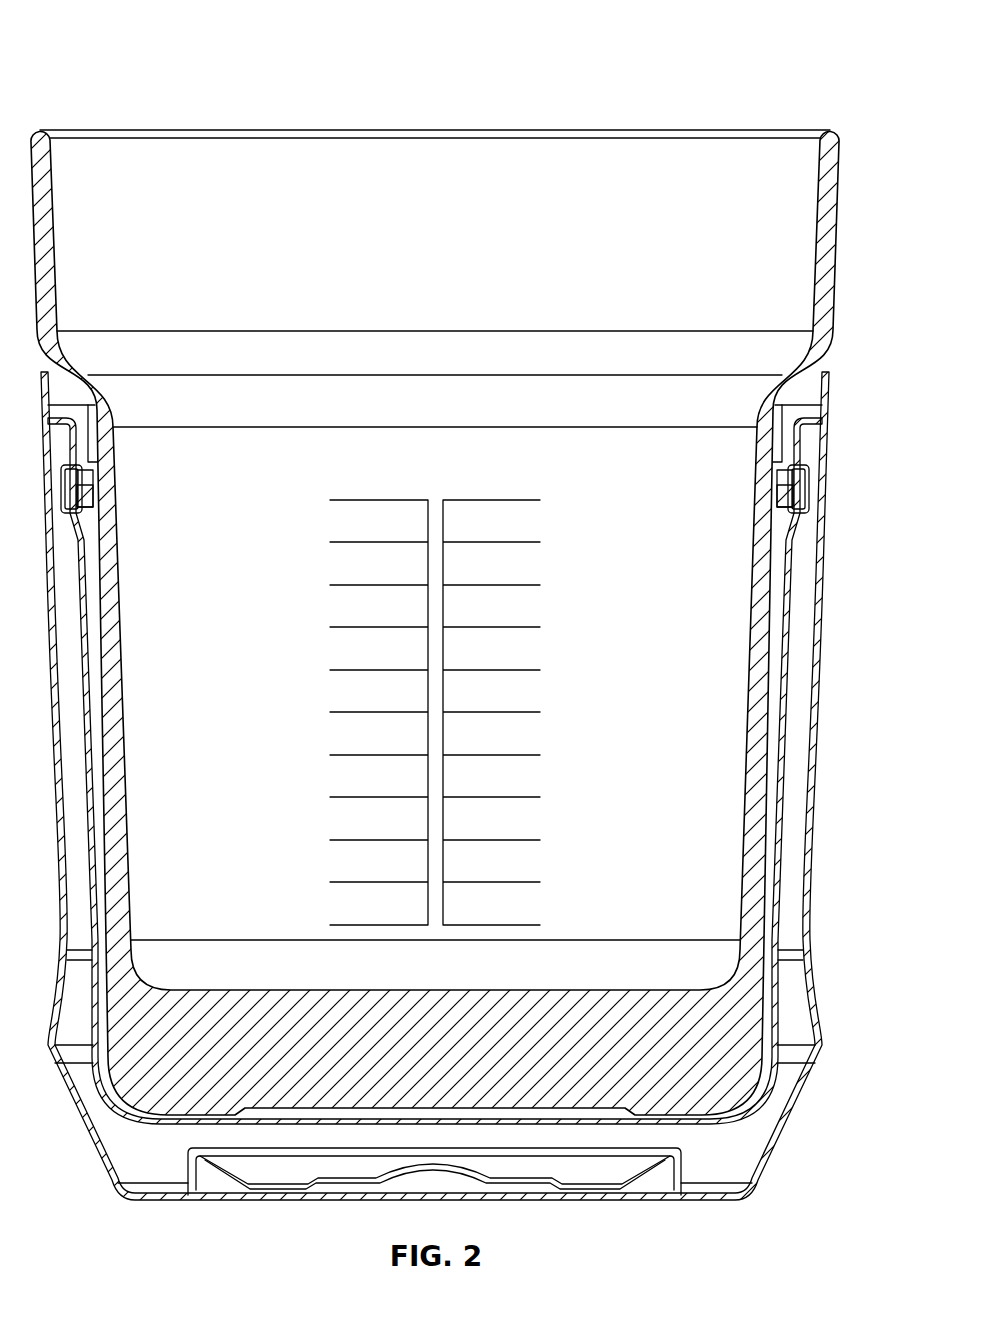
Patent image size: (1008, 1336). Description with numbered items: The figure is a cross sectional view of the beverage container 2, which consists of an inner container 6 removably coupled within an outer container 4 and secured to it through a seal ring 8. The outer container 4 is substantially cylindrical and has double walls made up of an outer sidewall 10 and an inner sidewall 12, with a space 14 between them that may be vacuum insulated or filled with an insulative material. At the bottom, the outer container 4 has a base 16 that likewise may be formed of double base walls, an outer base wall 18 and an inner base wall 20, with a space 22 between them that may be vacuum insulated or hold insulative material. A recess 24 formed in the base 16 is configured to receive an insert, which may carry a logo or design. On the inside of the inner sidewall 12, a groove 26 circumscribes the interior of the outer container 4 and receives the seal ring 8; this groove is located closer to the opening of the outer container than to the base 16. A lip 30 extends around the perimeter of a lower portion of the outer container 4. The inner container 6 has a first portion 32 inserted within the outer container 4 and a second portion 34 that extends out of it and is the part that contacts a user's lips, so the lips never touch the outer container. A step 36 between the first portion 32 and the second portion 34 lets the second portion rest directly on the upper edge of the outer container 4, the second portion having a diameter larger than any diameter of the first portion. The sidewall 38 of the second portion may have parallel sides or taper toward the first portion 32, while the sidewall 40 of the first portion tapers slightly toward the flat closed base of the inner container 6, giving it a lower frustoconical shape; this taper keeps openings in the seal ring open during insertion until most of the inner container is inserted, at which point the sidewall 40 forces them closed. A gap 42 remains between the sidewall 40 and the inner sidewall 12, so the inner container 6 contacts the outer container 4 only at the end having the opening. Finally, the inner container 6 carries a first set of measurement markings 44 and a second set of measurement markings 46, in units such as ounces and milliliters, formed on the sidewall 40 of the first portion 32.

The beverage container 2 is at (93, 32).
The outer container 4 is at (820, 634).
The inner container 6 is at (826, 197).
The seal ring 8 is at (795, 497).
The outer sidewall 10 is at (832, 672).
The inner sidewall 12 is at (786, 792).
The space 14 is at (805, 748).
The base 16 is at (720, 1183).
The outer base wall 18 is at (183, 1200).
The inner base wall 20 is at (162, 1122).
The space 22 is at (311, 1132).
The recess 24 is at (655, 1178).
The groove 26 is at (812, 495).
The lip 30 is at (828, 1045).
The first portion 32 is at (766, 606).
The second portion 34 is at (820, 240).
The step 36 is at (787, 385).
The sidewall 38 is at (45, 215).
The sidewall 40 is at (752, 866).
The gap 42 is at (768, 925).
The first set of measurement markings 44 is at (347, 676).
The second set of measurement markings 46 is at (500, 715).